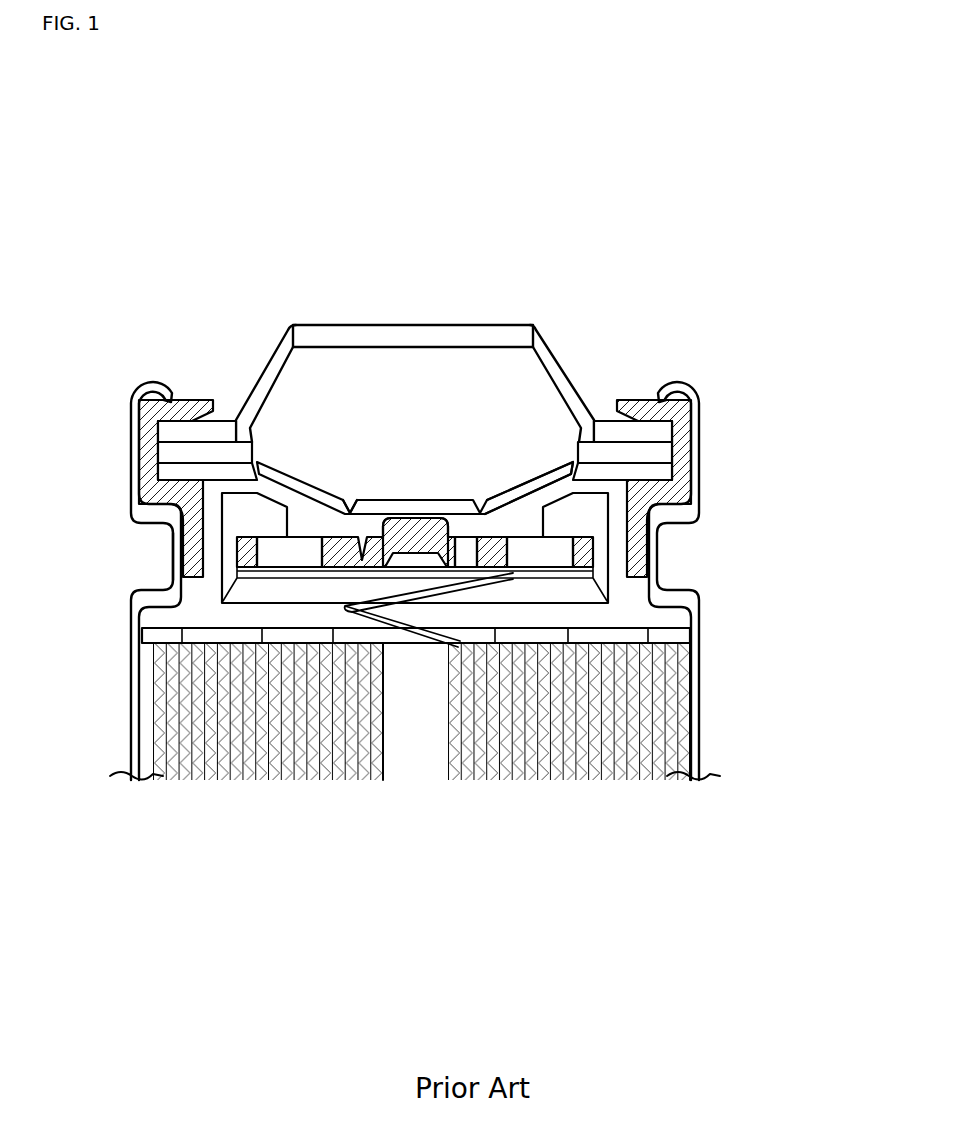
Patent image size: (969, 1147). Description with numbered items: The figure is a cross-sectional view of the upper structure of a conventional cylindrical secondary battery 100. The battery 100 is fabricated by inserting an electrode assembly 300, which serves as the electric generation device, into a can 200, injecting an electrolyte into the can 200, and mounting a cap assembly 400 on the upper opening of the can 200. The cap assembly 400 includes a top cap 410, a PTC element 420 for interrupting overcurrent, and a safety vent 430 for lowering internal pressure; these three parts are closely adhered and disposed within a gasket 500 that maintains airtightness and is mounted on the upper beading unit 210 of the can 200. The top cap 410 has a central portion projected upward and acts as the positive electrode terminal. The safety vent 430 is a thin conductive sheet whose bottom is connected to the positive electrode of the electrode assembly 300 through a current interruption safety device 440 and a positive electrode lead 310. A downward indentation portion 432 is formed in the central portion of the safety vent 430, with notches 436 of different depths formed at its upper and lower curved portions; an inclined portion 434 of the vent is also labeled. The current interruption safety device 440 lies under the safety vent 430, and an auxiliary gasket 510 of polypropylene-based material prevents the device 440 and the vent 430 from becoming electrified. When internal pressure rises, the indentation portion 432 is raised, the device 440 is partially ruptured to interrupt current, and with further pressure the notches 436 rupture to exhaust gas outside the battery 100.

The battery 100 is at (127, 146).
The can 200 is at (699, 713).
The upper beading unit 210 is at (176, 565).
The electrode assembly 300 is at (416, 767).
The positive electrode lead 310 is at (688, 815).
The cap assembly 400 is at (757, 323).
The top cap 410 is at (390, 333).
The PTC element 420 is at (157, 458).
The safety vent 430 is at (306, 483).
The downward indentation portion 432 is at (426, 516).
The inclined portion of safety vent 434 is at (567, 470).
The notches 436 is at (350, 500).
The current interruption safety device 440 is at (400, 403).
The gasket 500 is at (630, 399).
The auxiliary gasket 510 is at (603, 582).